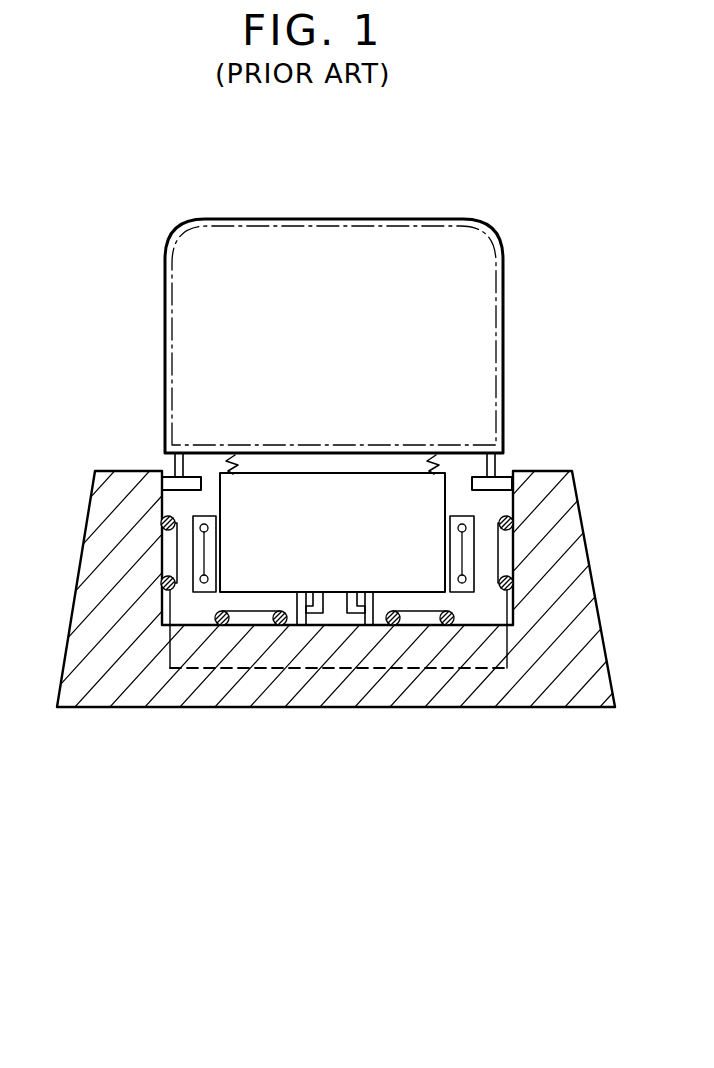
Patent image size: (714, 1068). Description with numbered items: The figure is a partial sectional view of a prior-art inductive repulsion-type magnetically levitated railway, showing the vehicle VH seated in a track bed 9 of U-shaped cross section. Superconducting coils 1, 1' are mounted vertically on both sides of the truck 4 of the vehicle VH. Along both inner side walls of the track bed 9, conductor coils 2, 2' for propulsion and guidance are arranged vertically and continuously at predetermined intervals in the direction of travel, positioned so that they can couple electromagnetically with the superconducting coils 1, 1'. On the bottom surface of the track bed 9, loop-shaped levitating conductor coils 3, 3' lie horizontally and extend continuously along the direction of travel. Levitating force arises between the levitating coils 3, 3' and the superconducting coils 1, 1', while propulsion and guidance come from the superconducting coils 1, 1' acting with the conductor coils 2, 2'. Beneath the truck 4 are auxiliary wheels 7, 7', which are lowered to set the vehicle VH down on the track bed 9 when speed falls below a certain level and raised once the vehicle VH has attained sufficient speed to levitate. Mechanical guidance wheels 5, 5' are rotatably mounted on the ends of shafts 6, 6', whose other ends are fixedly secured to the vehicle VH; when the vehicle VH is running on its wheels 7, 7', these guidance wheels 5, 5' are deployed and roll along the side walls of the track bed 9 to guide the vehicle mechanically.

The vehicle VH is at (472, 252).
The superconducting coil 1 is at (232, 554).
The superconducting coil 1' is at (438, 554).
The conductor coil for propulsion and guidance 2 is at (111, 553).
The conductor coil for propulsion and guidance 2' is at (566, 550).
The levitating conductor coil 3 is at (217, 688).
The levitating conductor coil 3' is at (420, 688).
The truck 4 is at (360, 490).
The mechanical guidance wheel 5 is at (144, 463).
The mechanical guidance wheel 5' is at (527, 453).
The shaft 6 is at (145, 441).
The shaft 6' is at (520, 424).
The auxiliary wheel 7 is at (288, 679).
The auxiliary wheel 7' is at (346, 679).
The track bed 9 is at (558, 697).